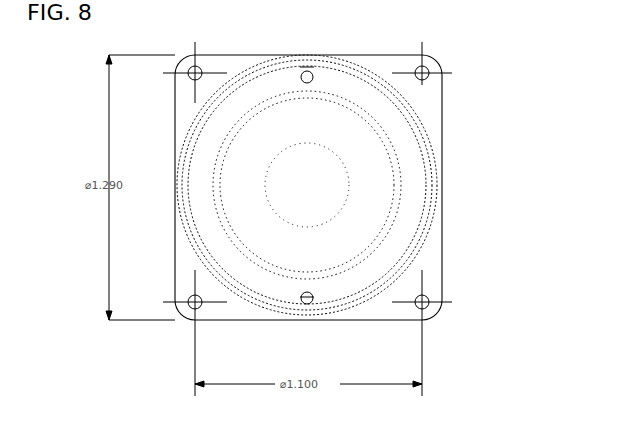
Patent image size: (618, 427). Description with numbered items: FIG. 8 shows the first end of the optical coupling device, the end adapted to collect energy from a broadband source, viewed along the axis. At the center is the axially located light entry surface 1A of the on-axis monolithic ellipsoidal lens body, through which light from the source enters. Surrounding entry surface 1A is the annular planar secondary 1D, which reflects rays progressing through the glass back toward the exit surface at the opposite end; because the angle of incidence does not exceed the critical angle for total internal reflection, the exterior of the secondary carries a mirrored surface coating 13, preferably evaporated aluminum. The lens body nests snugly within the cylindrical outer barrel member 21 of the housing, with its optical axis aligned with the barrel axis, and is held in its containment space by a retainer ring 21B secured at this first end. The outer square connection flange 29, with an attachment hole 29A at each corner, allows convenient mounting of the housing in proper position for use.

The light entry surface 1A is at (298, 183).
The secondary 1D is at (383, 168).
The mirrored surface coating 13 is at (307, 185).
The cylindrical outer barrel member 21 is at (413, 260).
The retainer ring 21B is at (420, 203).
The connection flange 29 is at (427, 317).
The attachment hole 29A is at (434, 58).